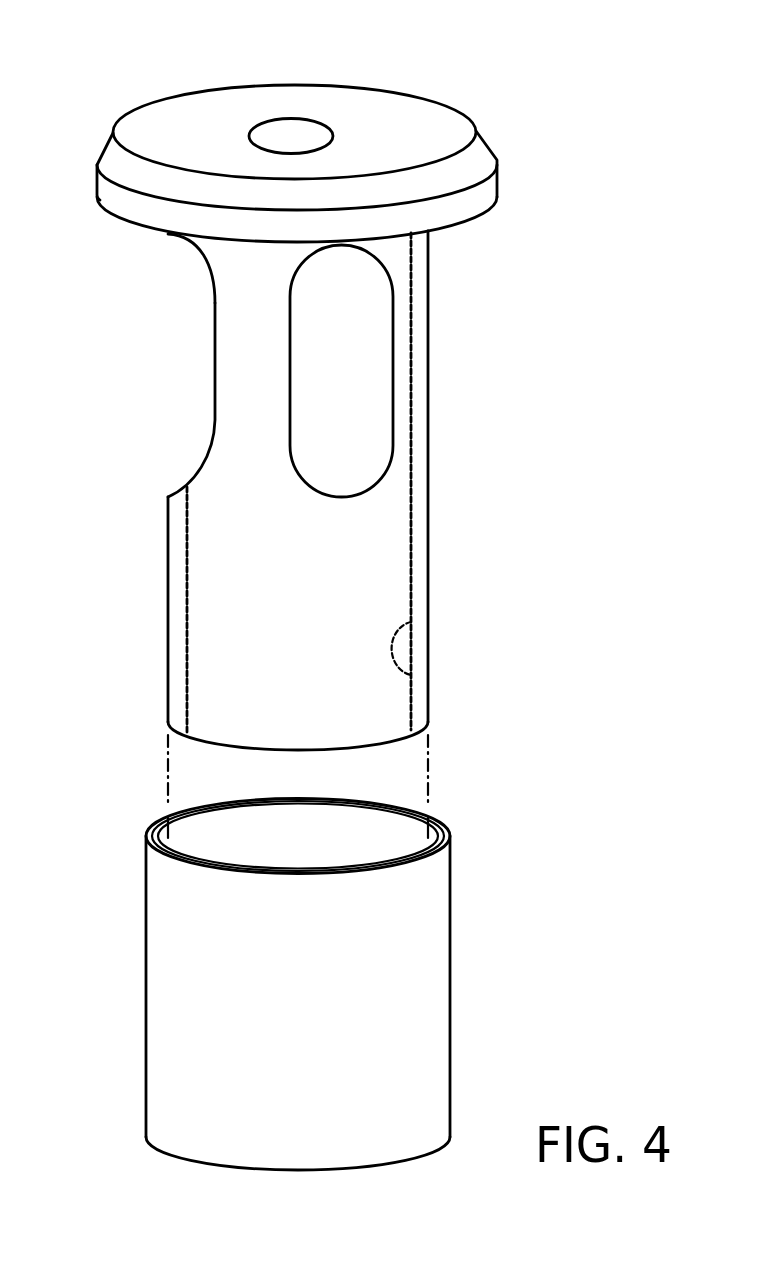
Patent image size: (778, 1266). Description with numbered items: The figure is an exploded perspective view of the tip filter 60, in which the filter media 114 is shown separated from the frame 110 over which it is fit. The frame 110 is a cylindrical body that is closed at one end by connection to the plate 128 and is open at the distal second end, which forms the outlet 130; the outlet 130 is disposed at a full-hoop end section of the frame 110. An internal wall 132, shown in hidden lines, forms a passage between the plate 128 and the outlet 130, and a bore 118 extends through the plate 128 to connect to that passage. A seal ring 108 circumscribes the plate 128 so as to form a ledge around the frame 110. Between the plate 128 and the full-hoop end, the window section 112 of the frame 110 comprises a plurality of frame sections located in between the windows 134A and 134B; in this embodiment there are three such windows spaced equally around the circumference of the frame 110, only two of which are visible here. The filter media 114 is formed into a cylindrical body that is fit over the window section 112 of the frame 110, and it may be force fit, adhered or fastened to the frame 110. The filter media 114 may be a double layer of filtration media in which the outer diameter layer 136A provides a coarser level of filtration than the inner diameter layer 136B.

The tip filter 60 is at (586, 247).
The seal ring 108 is at (500, 183).
The plate 128 is at (432, 123).
The bore 118 is at (322, 140).
The frame 110 is at (343, 600).
The window section 112 is at (233, 393).
The window 134A is at (212, 353).
The window 134B is at (392, 369).
The internal wall 132 is at (413, 677).
The outlet 130 is at (213, 747).
The filter media 114 is at (497, 968).
The outer diameter layer 136A is at (193, 1017).
The inner diameter layer 136B is at (233, 837).